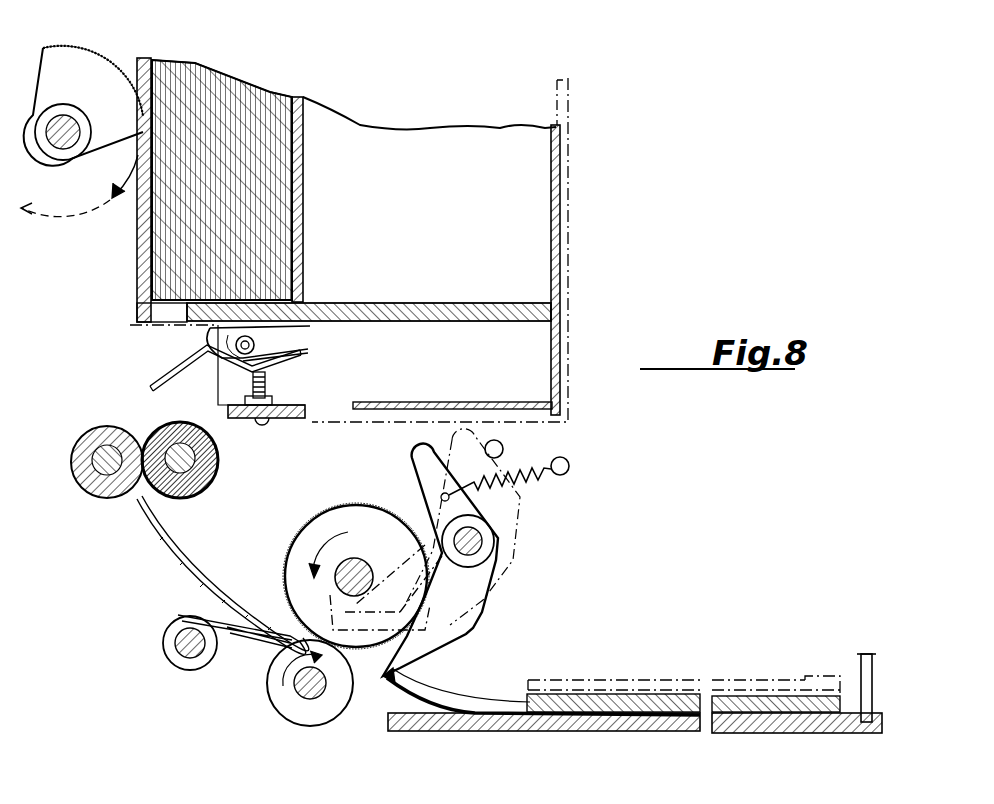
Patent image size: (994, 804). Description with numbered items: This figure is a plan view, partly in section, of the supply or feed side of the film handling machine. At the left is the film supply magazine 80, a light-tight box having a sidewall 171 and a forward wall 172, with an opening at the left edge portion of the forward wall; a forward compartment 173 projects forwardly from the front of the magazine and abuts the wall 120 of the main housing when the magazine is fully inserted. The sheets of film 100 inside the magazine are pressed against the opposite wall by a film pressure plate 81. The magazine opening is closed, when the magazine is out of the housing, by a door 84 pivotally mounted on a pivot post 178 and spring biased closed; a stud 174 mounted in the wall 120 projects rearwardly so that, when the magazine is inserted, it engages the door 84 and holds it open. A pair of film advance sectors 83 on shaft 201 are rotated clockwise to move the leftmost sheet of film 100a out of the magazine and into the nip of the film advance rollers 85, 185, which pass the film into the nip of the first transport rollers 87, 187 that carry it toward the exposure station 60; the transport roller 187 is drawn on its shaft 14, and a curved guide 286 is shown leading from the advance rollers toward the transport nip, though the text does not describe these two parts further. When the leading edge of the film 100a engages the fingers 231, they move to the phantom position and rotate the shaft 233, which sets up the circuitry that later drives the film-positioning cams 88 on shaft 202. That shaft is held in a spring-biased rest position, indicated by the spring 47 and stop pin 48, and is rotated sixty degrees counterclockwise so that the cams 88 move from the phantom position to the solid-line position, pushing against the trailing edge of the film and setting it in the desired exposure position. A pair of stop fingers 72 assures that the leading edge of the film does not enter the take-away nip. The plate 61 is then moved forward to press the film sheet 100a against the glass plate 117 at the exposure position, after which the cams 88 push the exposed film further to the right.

The feed roller shaft 14 is at (358, 572).
The spring 47 is at (532, 485).
The stop pin 48 is at (503, 449).
The exposure station 60 is at (759, 775).
The plate 61 is at (672, 697).
The stop fingers 72 is at (862, 672).
The supply magazine 80 is at (446, 152).
The film pressure plate 81 is at (303, 210).
The film advance sectors 83 is at (112, 122).
The door 84 is at (160, 380).
The film advance roller 85 is at (78, 473).
The transport roller 87 is at (285, 679).
The film-positioning cams 88 is at (465, 605).
The sheets of film 100 is at (256, 118).
The sheet of film 100a is at (468, 700).
The glass plate 117 is at (655, 731).
The wall of the main housing 120 is at (294, 420).
The sidewall 171 is at (552, 210).
The forward wall 172 is at (428, 306).
The forward compartment 173 is at (471, 375).
The stud 174 is at (268, 392).
The pivot post 178 is at (272, 348).
The film advance roller 185 is at (206, 482).
The transport roller 187 is at (350, 522).
The shaft 201 is at (63, 142).
The shaft 202 is at (486, 548).
The fingers 231 is at (277, 622).
The shaft 233 is at (183, 641).
The belt 286 is at (190, 573).